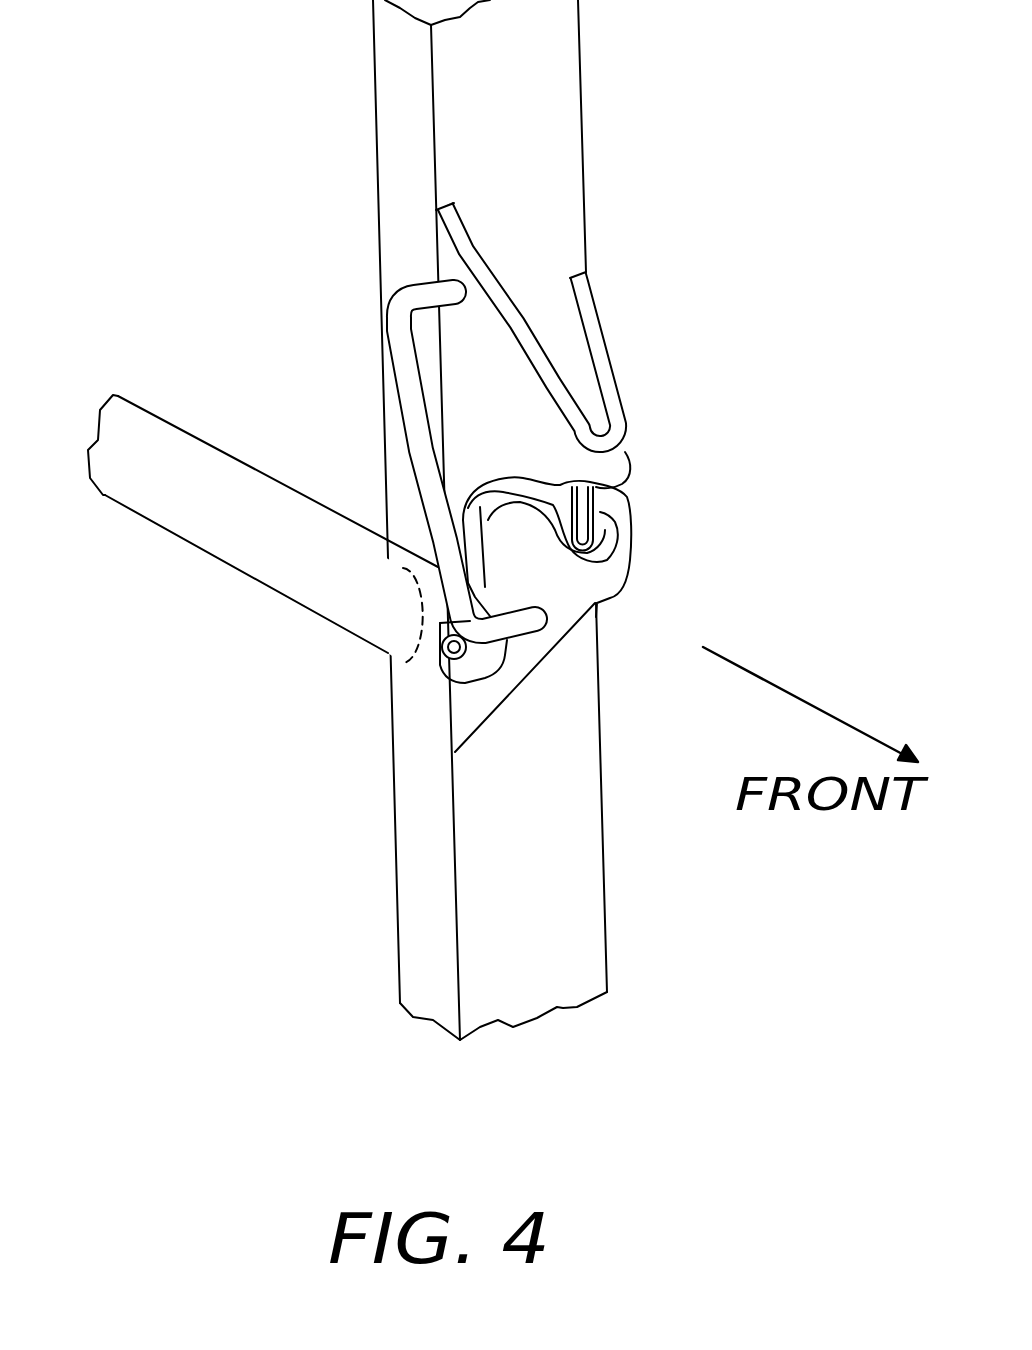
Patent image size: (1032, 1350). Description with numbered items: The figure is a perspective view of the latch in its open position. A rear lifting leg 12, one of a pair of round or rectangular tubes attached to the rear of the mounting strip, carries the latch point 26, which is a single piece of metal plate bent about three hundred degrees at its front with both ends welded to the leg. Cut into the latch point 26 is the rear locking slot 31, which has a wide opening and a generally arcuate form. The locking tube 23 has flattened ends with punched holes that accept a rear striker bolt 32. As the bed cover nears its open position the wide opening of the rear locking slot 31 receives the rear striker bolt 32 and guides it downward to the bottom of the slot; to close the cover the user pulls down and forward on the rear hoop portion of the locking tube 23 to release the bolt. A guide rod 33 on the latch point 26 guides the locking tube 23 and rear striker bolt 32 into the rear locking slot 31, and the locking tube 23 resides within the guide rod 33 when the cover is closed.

The rear lifting leg 12 is at (393, 68).
The locking tube 23 is at (205, 522).
The latch point 26 is at (628, 462).
The rear locking slot 31 is at (575, 497).
The rear striker bolt 32 is at (447, 650).
The guide rod 33 is at (398, 320).